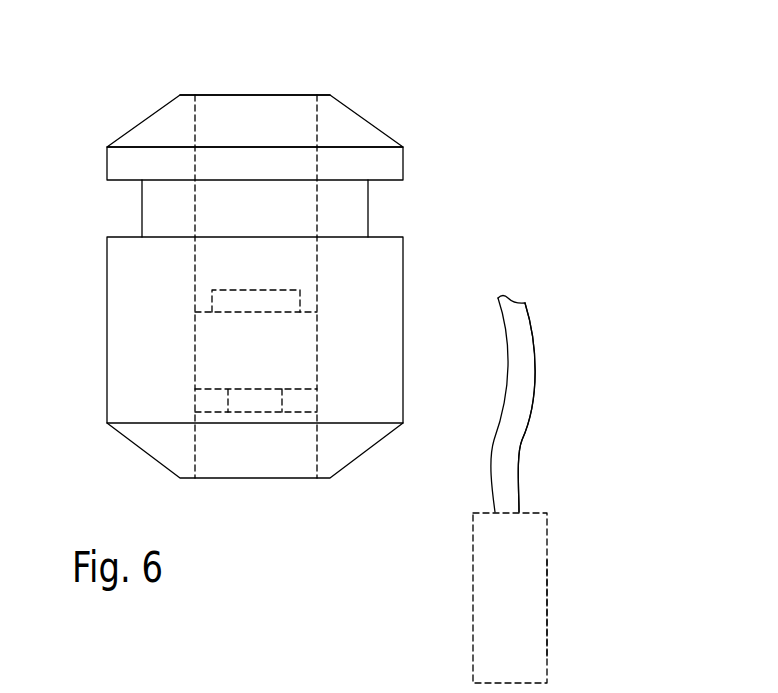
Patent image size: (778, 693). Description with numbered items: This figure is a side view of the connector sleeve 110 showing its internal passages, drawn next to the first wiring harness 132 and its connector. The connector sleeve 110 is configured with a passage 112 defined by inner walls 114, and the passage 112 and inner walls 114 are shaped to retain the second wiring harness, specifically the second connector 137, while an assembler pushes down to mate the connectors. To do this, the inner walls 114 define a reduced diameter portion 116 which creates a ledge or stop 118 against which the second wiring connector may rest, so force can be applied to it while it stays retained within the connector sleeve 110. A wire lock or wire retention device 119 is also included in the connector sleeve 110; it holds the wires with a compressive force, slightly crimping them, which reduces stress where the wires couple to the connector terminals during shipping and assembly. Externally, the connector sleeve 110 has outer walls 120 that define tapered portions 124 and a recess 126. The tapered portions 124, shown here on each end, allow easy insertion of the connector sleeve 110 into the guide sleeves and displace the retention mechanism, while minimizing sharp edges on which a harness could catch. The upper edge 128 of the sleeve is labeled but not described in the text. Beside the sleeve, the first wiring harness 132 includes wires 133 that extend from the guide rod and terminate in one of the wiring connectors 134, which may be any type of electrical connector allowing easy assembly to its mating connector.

The connector sleeve 110 is at (266, 245).
The passage 112 is at (228, 116).
The inner walls 114 is at (317, 123).
The reduced diameter portion 116 is at (303, 301).
The ledge 118 is at (205, 292).
The wire retention device 119 is at (207, 398).
The outer walls 120 is at (405, 270).
The tapered portions 124 is at (350, 106).
The recess 126 is at (370, 208).
The top surface 128 is at (190, 95).
The first wiring harness 132 is at (533, 382).
The wires 133 is at (519, 447).
The wiring connector 134 is at (550, 649).
The second connector 137 is at (545, 608).